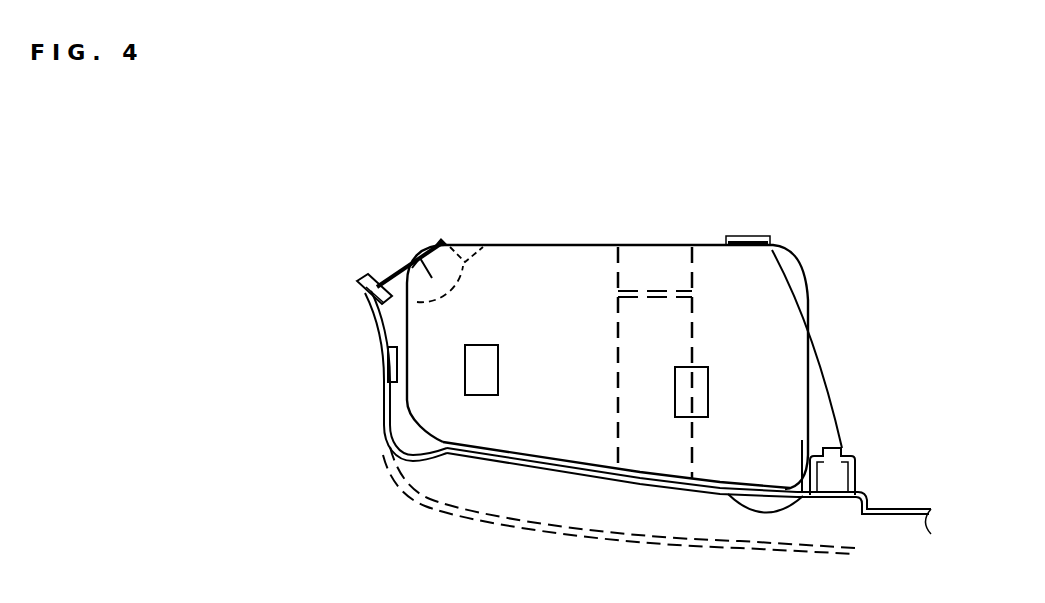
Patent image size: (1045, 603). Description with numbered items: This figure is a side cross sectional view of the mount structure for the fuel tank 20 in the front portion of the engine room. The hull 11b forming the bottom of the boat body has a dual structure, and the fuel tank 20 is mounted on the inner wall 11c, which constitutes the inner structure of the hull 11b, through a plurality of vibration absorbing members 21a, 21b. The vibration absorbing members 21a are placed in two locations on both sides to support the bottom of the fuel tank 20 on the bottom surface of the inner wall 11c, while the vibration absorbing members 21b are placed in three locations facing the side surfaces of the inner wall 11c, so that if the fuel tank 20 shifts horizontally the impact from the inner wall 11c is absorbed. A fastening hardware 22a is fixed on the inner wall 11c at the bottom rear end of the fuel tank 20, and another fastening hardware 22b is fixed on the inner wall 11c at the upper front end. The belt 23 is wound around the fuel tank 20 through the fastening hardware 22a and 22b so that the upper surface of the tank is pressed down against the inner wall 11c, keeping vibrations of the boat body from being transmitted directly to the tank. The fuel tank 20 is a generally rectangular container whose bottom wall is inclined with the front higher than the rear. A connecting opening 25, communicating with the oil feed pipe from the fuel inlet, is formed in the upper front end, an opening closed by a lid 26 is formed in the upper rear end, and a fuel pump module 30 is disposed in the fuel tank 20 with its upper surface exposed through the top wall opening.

The hull 11b is at (557, 537).
The inner wall 11c is at (886, 506).
The fuel tank 20 is at (791, 254).
The vibration absorbing members 21a is at (510, 463).
The vibration absorbing members 21b is at (388, 362).
The fastening hardware 22a is at (850, 455).
The fastening hardware 22b is at (368, 278).
The belt 23 is at (821, 348).
The connecting opening 25 is at (471, 240).
The lid 26 is at (748, 236).
The fuel pump module 30 is at (705, 298).